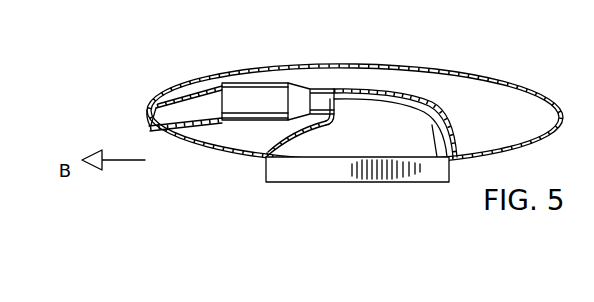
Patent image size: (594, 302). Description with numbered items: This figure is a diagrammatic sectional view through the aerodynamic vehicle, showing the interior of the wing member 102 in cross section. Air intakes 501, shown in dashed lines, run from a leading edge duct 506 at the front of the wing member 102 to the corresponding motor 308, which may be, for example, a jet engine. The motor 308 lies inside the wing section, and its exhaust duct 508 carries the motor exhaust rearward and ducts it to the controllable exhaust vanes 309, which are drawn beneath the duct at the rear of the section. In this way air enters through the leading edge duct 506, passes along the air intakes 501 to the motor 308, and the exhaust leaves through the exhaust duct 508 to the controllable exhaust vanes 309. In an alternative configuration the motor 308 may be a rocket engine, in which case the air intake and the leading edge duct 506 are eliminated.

The wing member 102 is at (518, 80).
The motor 308 is at (259, 92).
The controllable exhaust vanes 309 is at (338, 172).
The air intakes 501 is at (203, 97).
The leading edge duct 506 is at (147, 114).
The exhaust duct 508 is at (398, 110).